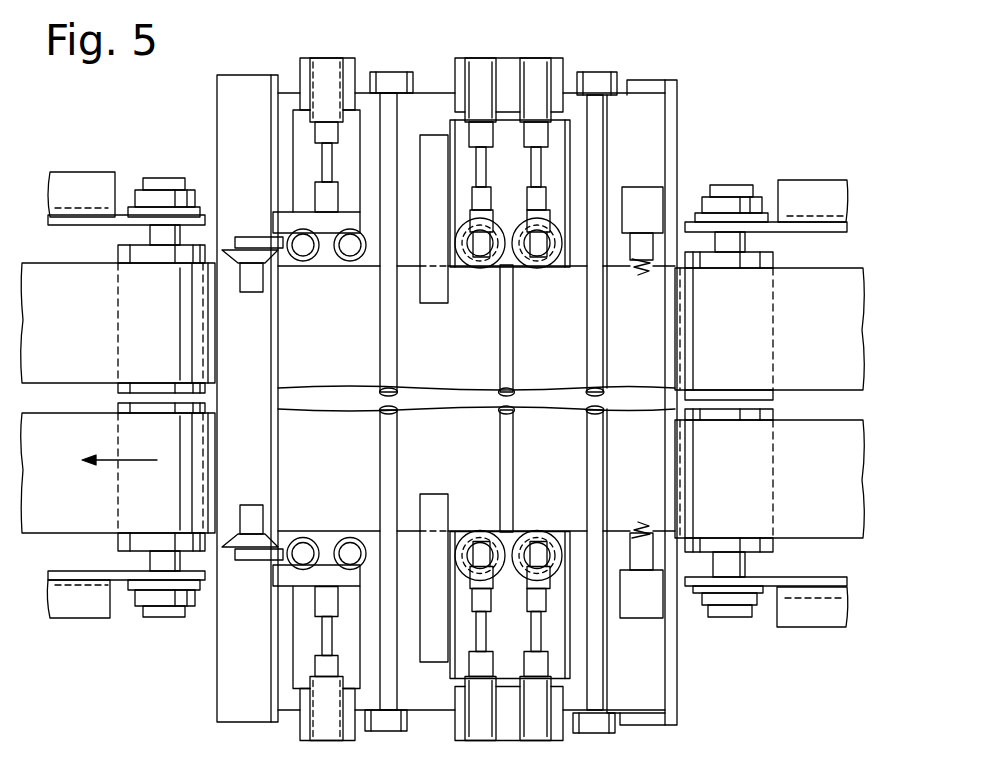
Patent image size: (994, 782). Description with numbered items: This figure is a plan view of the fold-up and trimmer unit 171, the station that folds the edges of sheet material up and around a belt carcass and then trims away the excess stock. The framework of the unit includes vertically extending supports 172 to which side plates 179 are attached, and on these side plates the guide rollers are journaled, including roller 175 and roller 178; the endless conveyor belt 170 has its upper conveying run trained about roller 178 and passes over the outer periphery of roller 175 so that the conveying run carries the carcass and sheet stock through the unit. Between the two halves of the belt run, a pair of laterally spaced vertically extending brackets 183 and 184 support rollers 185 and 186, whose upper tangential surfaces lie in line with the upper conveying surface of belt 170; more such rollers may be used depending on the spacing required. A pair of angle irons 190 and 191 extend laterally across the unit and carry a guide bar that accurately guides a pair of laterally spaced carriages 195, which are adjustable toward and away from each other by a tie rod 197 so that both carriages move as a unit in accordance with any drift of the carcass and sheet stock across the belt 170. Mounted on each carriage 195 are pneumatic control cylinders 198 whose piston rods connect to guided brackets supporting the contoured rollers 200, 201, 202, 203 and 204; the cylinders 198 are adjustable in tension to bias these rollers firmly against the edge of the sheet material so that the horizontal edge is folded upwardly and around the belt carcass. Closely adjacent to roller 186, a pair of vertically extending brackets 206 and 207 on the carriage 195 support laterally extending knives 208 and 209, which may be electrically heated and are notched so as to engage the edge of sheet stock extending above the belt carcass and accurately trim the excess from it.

The endless belt 170 is at (97, 367).
The fold-up and trimmer unit 171 is at (728, 91).
The vertically extending supports 172 is at (106, 207).
The guide roller 175 is at (150, 255).
The guide roller 178 is at (773, 263).
The side plates 179 is at (773, 222).
The vertically extending bracket 183 is at (407, 83).
The vertically extending bracket 184 is at (596, 88).
The roller 185 is at (393, 367).
The roller 186 is at (590, 438).
The angle iron 190 is at (228, 722).
The angle iron 191 is at (667, 725).
The carriages 195 is at (657, 143).
The tie rod 197 is at (507, 367).
The pneumatic control cylinders 198 is at (327, 62).
The contoured roller 200 is at (253, 288).
The contoured roller 201 is at (298, 268).
The contoured roller 202 is at (302, 262).
The contoured roller 203 is at (486, 268).
The contoured roller 204 is at (523, 268).
The vertically extending bracket 206 is at (648, 613).
The vertically extending bracket 207 is at (645, 200).
The knife 208 is at (645, 530).
The knife 209 is at (648, 275).